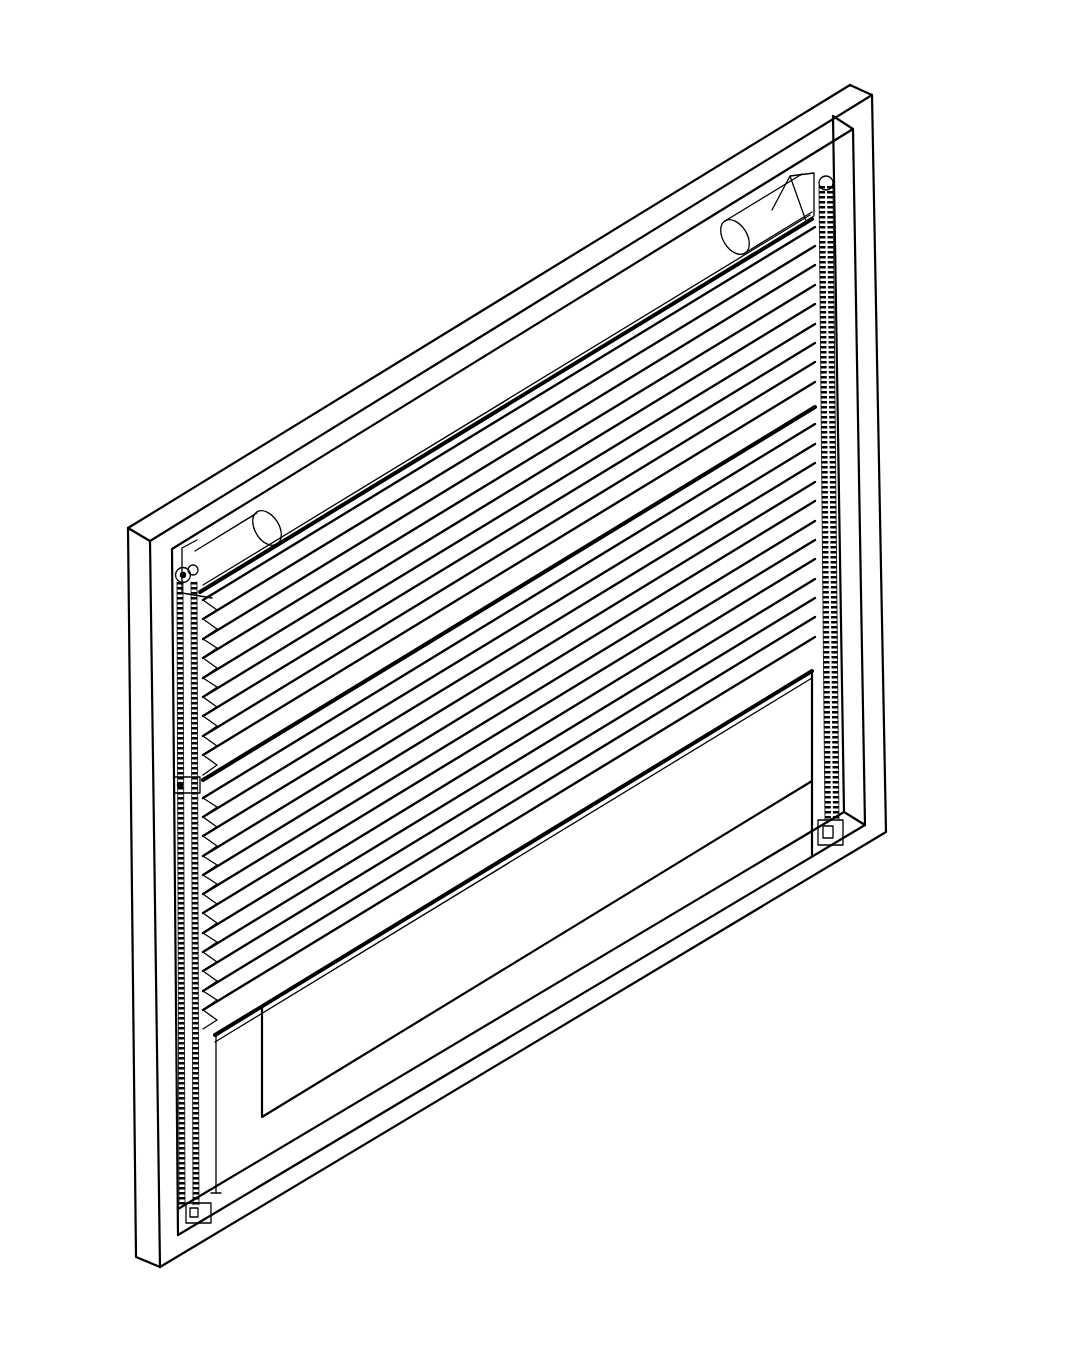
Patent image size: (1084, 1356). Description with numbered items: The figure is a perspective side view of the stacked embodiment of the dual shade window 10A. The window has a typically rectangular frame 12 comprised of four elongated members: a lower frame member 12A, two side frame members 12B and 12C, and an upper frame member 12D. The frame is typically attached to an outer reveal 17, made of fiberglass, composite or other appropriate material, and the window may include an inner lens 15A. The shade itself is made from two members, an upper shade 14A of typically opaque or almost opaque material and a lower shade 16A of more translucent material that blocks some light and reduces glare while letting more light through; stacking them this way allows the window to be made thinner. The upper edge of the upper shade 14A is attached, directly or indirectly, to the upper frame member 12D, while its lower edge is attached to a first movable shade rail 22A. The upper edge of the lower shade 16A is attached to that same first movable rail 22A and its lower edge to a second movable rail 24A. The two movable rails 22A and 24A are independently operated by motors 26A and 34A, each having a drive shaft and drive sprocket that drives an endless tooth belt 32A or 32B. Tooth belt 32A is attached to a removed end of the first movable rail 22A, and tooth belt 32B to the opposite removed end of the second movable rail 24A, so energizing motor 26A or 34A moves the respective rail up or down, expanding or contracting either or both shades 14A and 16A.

The dual shade window 10A is at (889, 101).
The frame 12 is at (348, 368).
The lower frame member 12A is at (588, 1012).
The side frame member 12B is at (143, 915).
The side frame member 12C is at (883, 627).
The upper frame member 12D is at (537, 284).
The upper shade 14A is at (546, 562).
The lower shade 16A is at (546, 767).
The inner lens 15A is at (546, 915).
The outer reveal 17 is at (539, 1000).
The first movable shade rail 22A is at (182, 785).
The second movable shade rail 24A is at (215, 1038).
The first movable shade rail motor 26A is at (236, 532).
The endless tooth belt 32A is at (203, 1098).
The endless tooth belt 32B is at (843, 735).
The second movable rail motor 34A is at (767, 212).